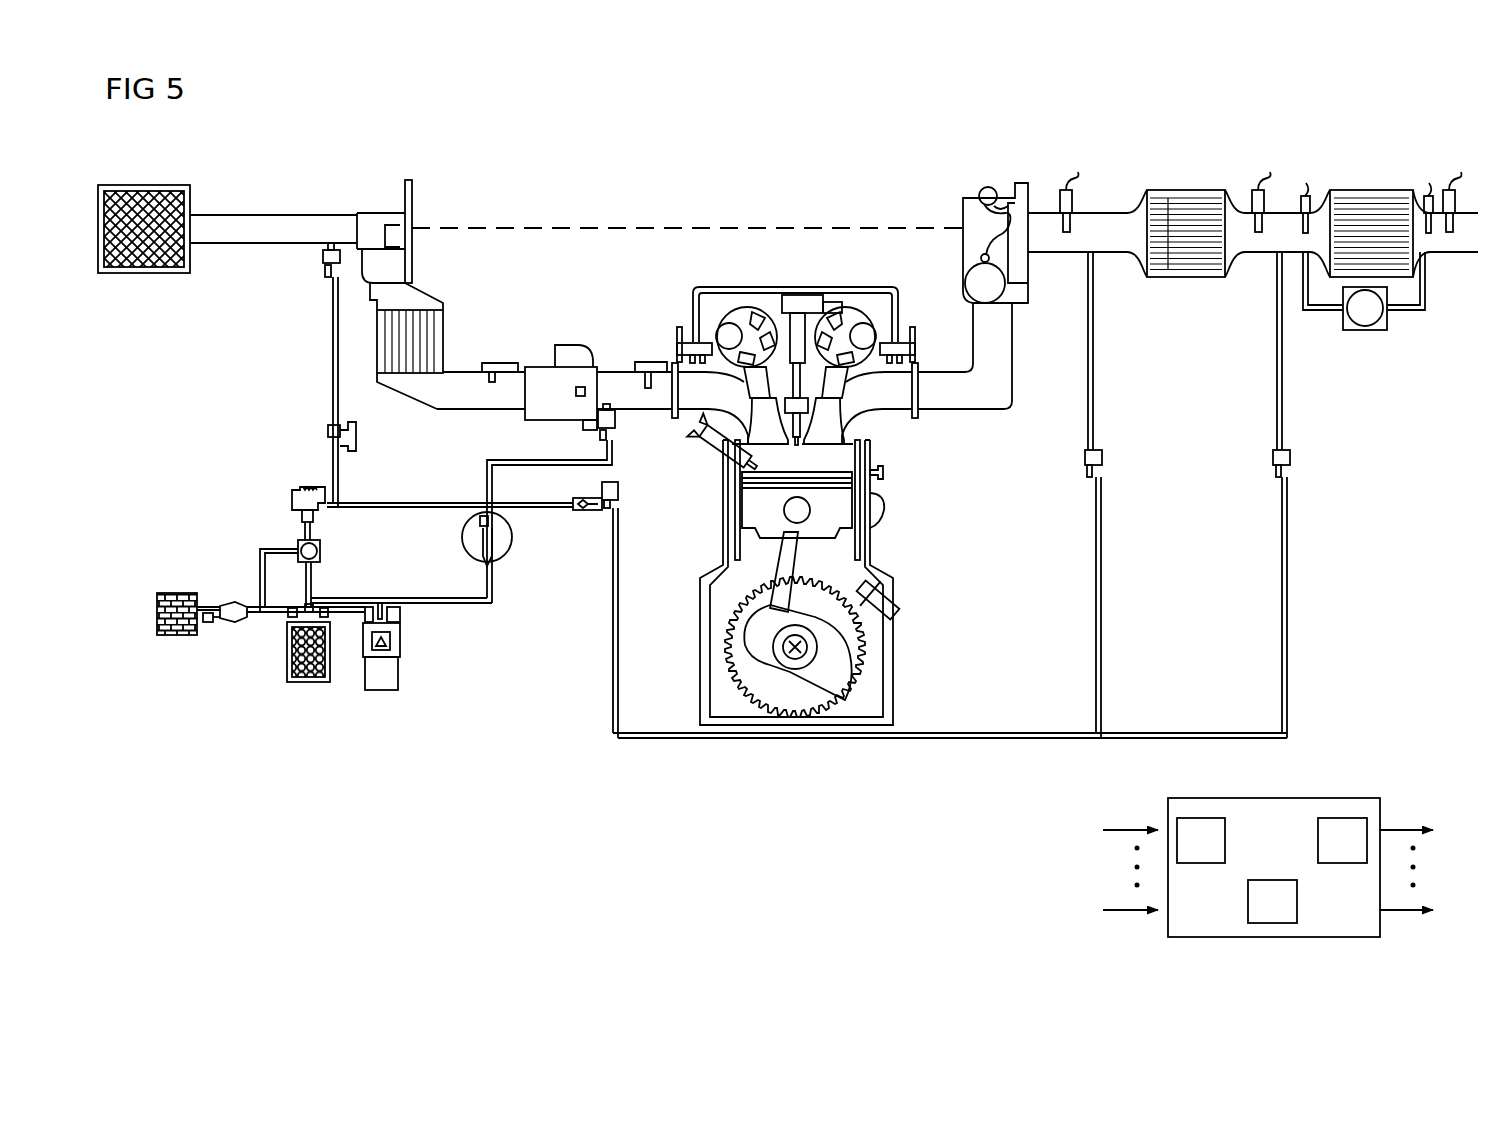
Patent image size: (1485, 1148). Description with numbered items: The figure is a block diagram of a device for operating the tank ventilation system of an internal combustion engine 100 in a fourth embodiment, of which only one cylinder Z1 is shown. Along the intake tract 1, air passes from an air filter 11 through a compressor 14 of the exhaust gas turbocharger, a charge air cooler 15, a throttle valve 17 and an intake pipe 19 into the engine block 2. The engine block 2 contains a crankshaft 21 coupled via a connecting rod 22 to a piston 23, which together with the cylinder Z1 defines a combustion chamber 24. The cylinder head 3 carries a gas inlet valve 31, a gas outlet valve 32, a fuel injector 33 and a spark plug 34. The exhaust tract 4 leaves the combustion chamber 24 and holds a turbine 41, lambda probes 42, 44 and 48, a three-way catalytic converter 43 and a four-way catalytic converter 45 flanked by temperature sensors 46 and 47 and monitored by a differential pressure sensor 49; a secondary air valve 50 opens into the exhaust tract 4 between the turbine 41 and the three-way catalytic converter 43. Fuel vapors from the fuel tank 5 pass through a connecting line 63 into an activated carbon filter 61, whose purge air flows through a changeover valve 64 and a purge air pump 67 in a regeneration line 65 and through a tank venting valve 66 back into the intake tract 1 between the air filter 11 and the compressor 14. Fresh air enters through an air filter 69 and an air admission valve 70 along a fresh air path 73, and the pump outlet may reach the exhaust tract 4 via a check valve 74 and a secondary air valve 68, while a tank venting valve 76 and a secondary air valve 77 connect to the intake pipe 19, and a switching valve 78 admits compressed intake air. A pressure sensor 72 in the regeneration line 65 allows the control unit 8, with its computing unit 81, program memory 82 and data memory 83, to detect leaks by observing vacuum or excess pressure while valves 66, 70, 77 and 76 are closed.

The internal combustion engine 100 is at (632, 170).
The intake tract 1 is at (286, 204).
The engine block 2 is at (947, 620).
The cylinder head 3 is at (748, 257).
The exhaust tract 4 is at (1066, 280).
The fuel tank 5 is at (380, 691).
The control unit 8 is at (1368, 798).
The air filter 11 is at (183, 184).
The compressor 14 is at (398, 182).
The charge air cooler 15 is at (444, 310).
The throttle valve 17 is at (568, 346).
The intake pipe 19 is at (486, 364).
The crankshaft 21 is at (852, 681).
The connecting rod 22 is at (720, 600).
The piston 23 is at (743, 518).
The combustion chamber 24 is at (842, 463).
The gas inlet valve 31 is at (715, 320).
The gas outlet valve 32 is at (866, 314).
The fuel injector 33 is at (705, 455).
The spark plug 34 is at (782, 297).
The turbine 41 is at (970, 190).
The lambda probe 42 is at (1079, 188).
The three-way catalytic converter 43 is at (1173, 190).
The lambda probe 44 is at (1264, 188).
The four-way catalytic converter 45 is at (1371, 190).
The temperature sensor 46 is at (1301, 192).
The temperature sensor 47 is at (1426, 192).
The lambda probe 48 is at (1456, 188).
The differential pressure sensor 49 is at (1372, 330).
The secondary air valve 50 is at (1085, 458).
The activated carbon filter 61 is at (307, 683).
The connecting line 63 is at (345, 613).
The changeover valve 64 is at (320, 553).
The regeneration line 65 is at (332, 368).
The tank venting valve 66 is at (322, 258).
The purge air pump 67 is at (304, 486).
The secondary air valve 68 is at (1273, 458).
The air filter 69 is at (183, 593).
The air admission valve 70 is at (226, 602).
The pressure sensor 72 is at (356, 448).
The fresh air path 73 is at (272, 548).
The check valve 74 is at (583, 511).
The tank venting valve 76 is at (616, 432).
The secondary air valve 77 is at (604, 488).
The switching valve 78 is at (461, 528).
The computing unit 81 is at (1268, 880).
The program memory 82 is at (1193, 818).
The data memory 83 is at (1336, 818).
The cylinder Z1 is at (883, 565).